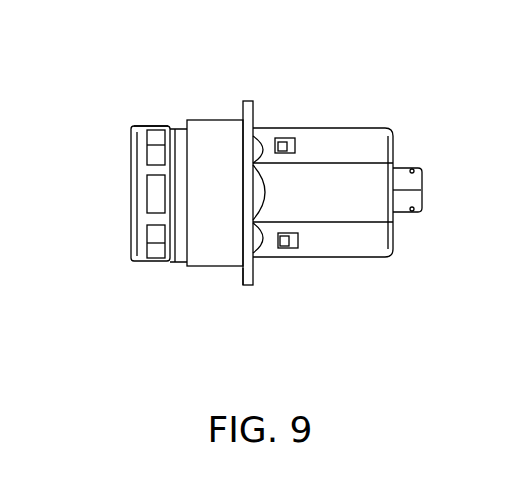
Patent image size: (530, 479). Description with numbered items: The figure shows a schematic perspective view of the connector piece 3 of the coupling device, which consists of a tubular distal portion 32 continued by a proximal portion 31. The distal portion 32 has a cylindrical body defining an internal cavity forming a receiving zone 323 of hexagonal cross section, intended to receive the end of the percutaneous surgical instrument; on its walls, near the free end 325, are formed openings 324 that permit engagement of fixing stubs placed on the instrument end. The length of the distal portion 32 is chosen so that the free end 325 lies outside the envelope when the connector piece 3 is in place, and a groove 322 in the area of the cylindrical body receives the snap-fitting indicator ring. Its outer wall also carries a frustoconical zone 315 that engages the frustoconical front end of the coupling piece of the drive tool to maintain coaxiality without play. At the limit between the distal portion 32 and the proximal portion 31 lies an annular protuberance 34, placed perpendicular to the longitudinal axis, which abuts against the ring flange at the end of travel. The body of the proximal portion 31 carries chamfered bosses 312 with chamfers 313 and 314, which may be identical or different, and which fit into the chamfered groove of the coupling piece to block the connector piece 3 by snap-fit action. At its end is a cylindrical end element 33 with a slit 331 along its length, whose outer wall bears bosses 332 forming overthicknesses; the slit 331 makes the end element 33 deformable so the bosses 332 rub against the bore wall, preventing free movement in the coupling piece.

The connector piece 3 is at (267, 201).
The proximal portion 31 is at (375, 229).
The tubular distal portion 32 is at (143, 222).
The cylindrical end element 33 is at (443, 184).
The annular protuberance 34 is at (252, 101).
The chamfered bosses 312 is at (290, 138).
The chamfer 313 is at (296, 250).
The chamfer 314 is at (265, 247).
The frustoconical zone 315 is at (243, 273).
The groove 322 is at (178, 263).
The receiving zone 323 is at (118, 186).
The openings 324 is at (152, 207).
The free end 325 is at (148, 126).
The slit 331 is at (431, 190).
The bosses 332 is at (412, 169).